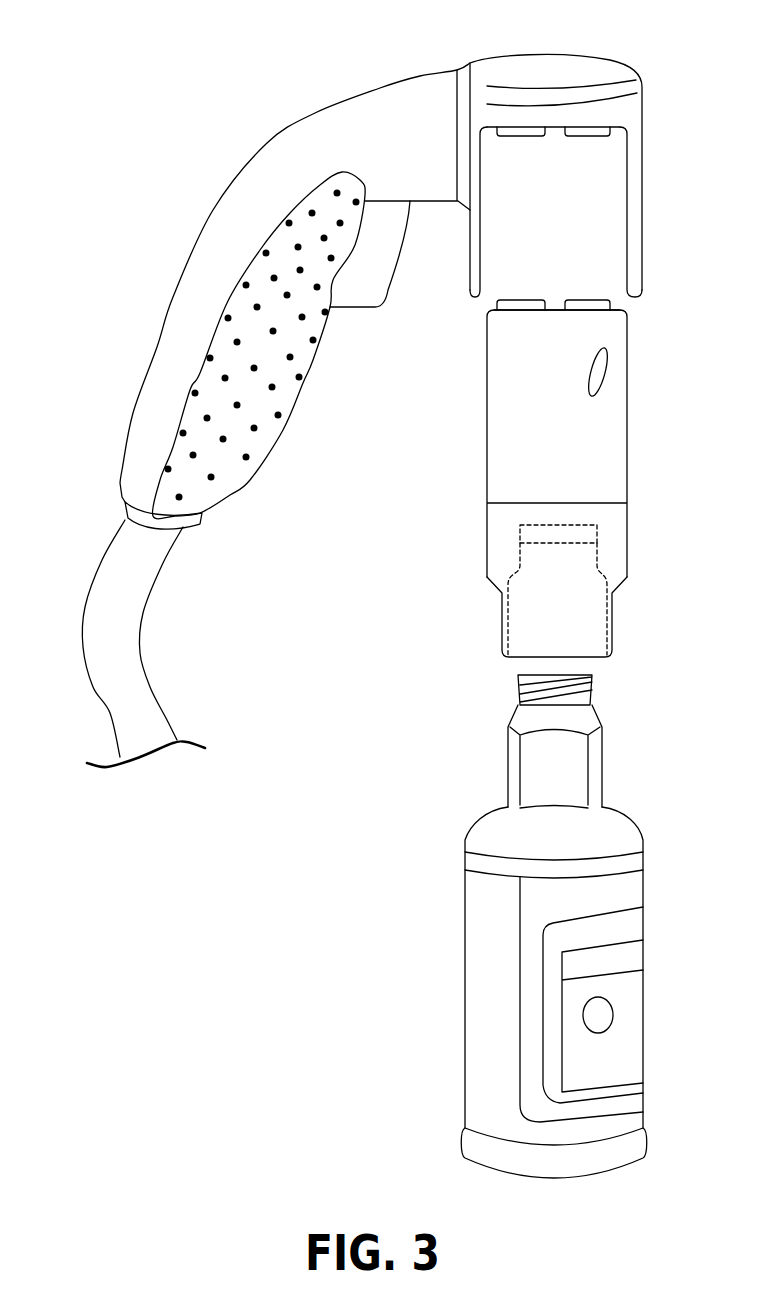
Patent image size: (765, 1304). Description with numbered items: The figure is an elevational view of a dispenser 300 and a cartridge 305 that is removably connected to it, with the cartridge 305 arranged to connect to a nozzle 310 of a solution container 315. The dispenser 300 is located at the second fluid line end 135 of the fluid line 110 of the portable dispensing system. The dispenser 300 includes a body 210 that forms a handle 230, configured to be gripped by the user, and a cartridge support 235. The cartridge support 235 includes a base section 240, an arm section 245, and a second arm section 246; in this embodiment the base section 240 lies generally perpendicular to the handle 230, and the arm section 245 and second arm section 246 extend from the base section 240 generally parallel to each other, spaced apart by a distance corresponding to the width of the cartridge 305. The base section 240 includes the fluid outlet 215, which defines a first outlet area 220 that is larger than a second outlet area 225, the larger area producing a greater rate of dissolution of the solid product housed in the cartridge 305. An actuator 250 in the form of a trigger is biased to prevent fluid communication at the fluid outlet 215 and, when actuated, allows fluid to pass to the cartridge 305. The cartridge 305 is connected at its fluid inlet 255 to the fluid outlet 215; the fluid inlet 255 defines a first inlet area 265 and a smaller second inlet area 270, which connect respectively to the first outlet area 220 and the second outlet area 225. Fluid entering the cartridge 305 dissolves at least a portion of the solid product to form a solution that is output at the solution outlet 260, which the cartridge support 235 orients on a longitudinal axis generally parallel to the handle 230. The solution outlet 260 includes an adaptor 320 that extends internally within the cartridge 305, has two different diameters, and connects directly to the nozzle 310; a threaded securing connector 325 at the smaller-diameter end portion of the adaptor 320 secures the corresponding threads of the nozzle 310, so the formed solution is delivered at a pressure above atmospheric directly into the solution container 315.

The dispenser 300 is at (315, 112).
The body 210 is at (408, 107).
The actuator 250 is at (343, 297).
The handle 230 is at (252, 408).
The second fluid line end 135 is at (170, 560).
The fluid line 110 is at (112, 643).
The cartridge support 235 is at (643, 104).
The base section 240 is at (537, 87).
The second arm section 246 is at (478, 218).
The arm section 245 is at (640, 200).
The fluid outlet 215 is at (548, 132).
The second outlet area 225 is at (537, 137).
The first outlet area 220 is at (571, 137).
The fluid inlet 255 is at (558, 301).
The second inlet area 270 is at (500, 300).
The first inlet area 265 is at (600, 300).
The cartridge 305 is at (628, 482).
The securing connector 325 is at (527, 538).
The adaptor 320 is at (585, 622).
The solution outlet 260 is at (500, 654).
The nozzle 310 is at (592, 693).
The solution container 315 is at (464, 1002).